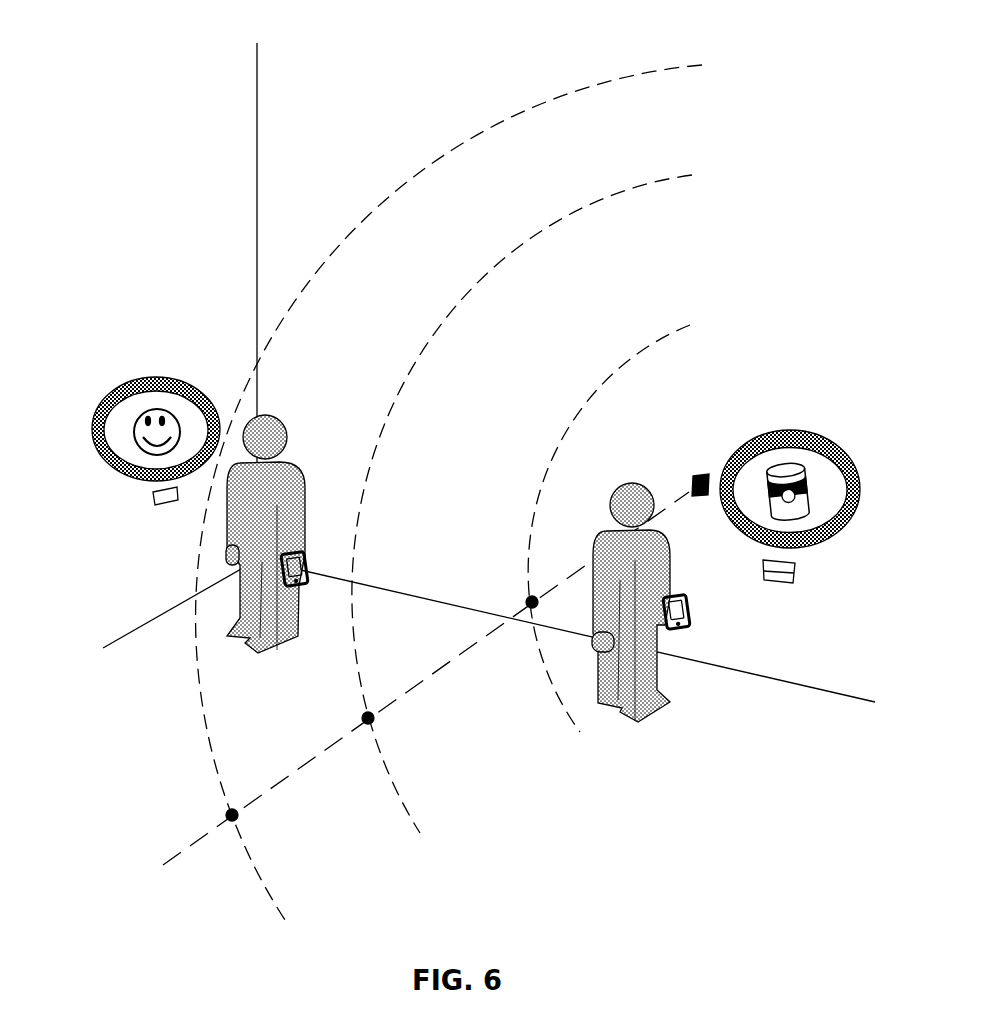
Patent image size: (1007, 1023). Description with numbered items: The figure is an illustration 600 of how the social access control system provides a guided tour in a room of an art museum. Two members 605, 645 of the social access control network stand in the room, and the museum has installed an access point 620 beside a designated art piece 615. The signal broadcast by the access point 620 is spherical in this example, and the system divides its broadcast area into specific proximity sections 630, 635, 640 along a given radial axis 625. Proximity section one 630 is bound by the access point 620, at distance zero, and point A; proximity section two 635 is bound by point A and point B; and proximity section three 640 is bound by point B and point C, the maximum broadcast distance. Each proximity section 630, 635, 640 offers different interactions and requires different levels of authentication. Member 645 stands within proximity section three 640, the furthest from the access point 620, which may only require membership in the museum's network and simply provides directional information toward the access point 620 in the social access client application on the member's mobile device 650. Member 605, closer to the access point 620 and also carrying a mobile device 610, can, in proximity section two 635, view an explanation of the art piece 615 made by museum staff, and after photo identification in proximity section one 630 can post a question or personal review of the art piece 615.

The illustration 600 is at (61, 41).
The member 605 is at (621, 602).
The mobile device 610 is at (691, 622).
The art piece 615 is at (790, 506).
The access point 620 is at (688, 473).
The radial axis 625 is at (443, 665).
The proximity section 1 630 is at (640, 528).
The proximity section 2 635 is at (522, 504).
The proximity section 3 640 is at (449, 492).
The member 645 is at (278, 534).
The mobile device 650 is at (311, 578).